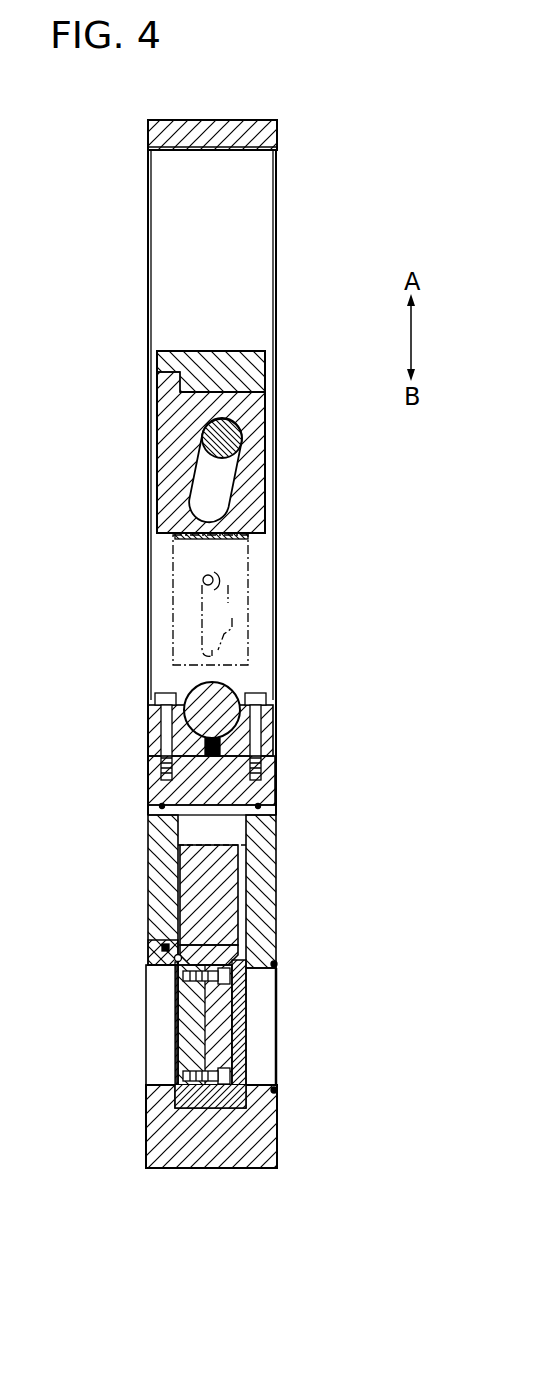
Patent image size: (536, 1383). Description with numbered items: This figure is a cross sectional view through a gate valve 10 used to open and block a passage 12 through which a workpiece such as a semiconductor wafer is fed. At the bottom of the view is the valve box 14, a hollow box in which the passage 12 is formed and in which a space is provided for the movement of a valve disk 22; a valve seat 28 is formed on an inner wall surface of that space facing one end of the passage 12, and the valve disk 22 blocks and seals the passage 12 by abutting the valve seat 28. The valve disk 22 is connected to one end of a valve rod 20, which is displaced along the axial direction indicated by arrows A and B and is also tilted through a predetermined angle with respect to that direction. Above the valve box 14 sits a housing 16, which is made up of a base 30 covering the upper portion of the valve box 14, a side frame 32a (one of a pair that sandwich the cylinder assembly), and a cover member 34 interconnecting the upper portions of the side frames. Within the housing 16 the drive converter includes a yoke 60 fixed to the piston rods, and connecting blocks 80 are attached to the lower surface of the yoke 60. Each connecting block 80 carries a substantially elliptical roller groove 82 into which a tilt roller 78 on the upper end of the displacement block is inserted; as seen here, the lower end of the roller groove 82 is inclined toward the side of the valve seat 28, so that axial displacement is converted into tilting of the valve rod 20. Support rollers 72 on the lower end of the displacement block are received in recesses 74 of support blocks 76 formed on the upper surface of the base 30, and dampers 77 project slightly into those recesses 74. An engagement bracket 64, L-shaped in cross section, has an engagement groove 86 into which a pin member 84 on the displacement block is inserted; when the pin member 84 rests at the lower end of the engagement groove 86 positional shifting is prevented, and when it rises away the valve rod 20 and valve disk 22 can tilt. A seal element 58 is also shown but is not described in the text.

The gate valve 10 is at (345, 89).
The passage 12 is at (165, 1082).
The valve box 14 is at (229, 1158).
The housing 16 is at (292, 237).
The valve rod 20 is at (215, 880).
The valve disk 22 is at (185, 1017).
The valve seat 28 is at (195, 1106).
The base 30 is at (258, 800).
The side frame 32a is at (178, 234).
The cover member 34 is at (237, 128).
The seal member 58 is at (172, 950).
The yoke 60 is at (204, 358).
The engagement bracket 64 is at (249, 543).
The support roller 72 is at (195, 695).
The recess 74 is at (185, 708).
The support block 76 is at (158, 728).
The damper 77 is at (270, 742).
The tilt roller 78 is at (215, 440).
The connecting block 80 is at (232, 407).
The roller groove 82 is at (215, 485).
The pin member 84 is at (203, 578).
The engagement groove 86 is at (228, 608).